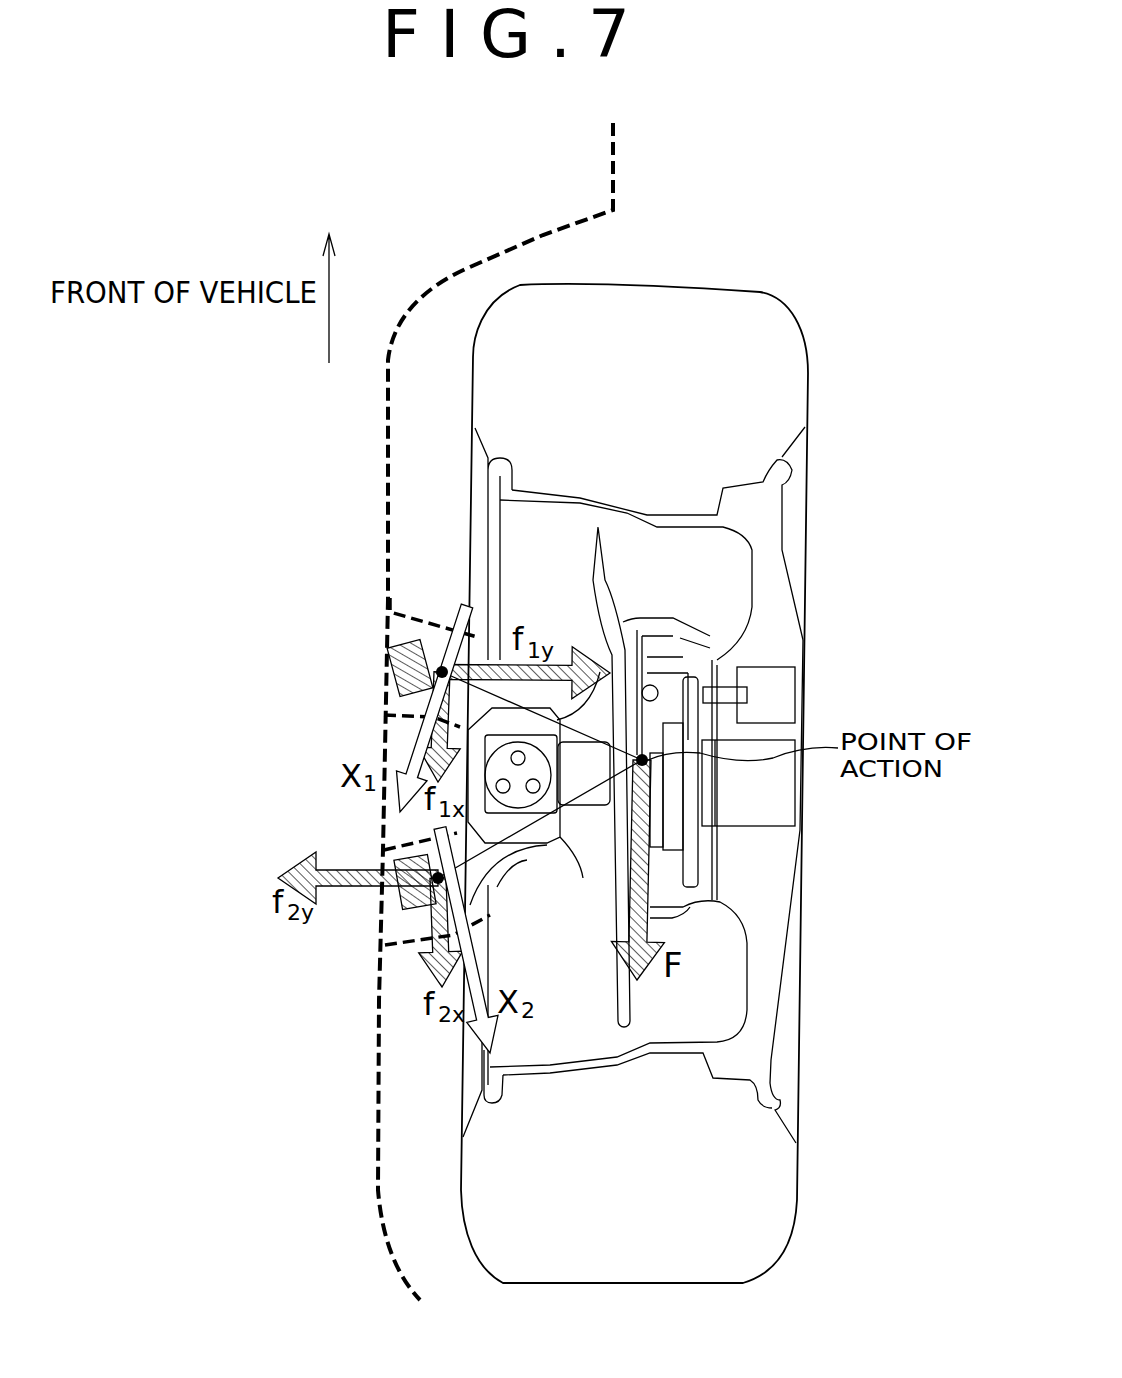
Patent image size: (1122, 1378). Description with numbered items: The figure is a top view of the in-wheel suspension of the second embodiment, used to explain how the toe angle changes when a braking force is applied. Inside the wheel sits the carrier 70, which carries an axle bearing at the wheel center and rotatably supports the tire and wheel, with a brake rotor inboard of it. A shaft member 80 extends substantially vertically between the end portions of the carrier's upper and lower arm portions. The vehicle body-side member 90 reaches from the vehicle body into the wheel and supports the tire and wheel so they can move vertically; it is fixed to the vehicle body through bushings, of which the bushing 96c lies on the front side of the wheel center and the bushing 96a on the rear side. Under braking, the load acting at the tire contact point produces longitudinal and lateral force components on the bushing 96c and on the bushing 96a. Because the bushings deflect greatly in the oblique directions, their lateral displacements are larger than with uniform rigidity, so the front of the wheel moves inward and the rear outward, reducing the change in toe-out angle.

The carrier 70 is at (590, 830).
The shaft member 80 is at (527, 797).
The vehicle body-side member 90 is at (505, 840).
The bushing 96a is at (393, 915).
The bushing 96c is at (390, 661).